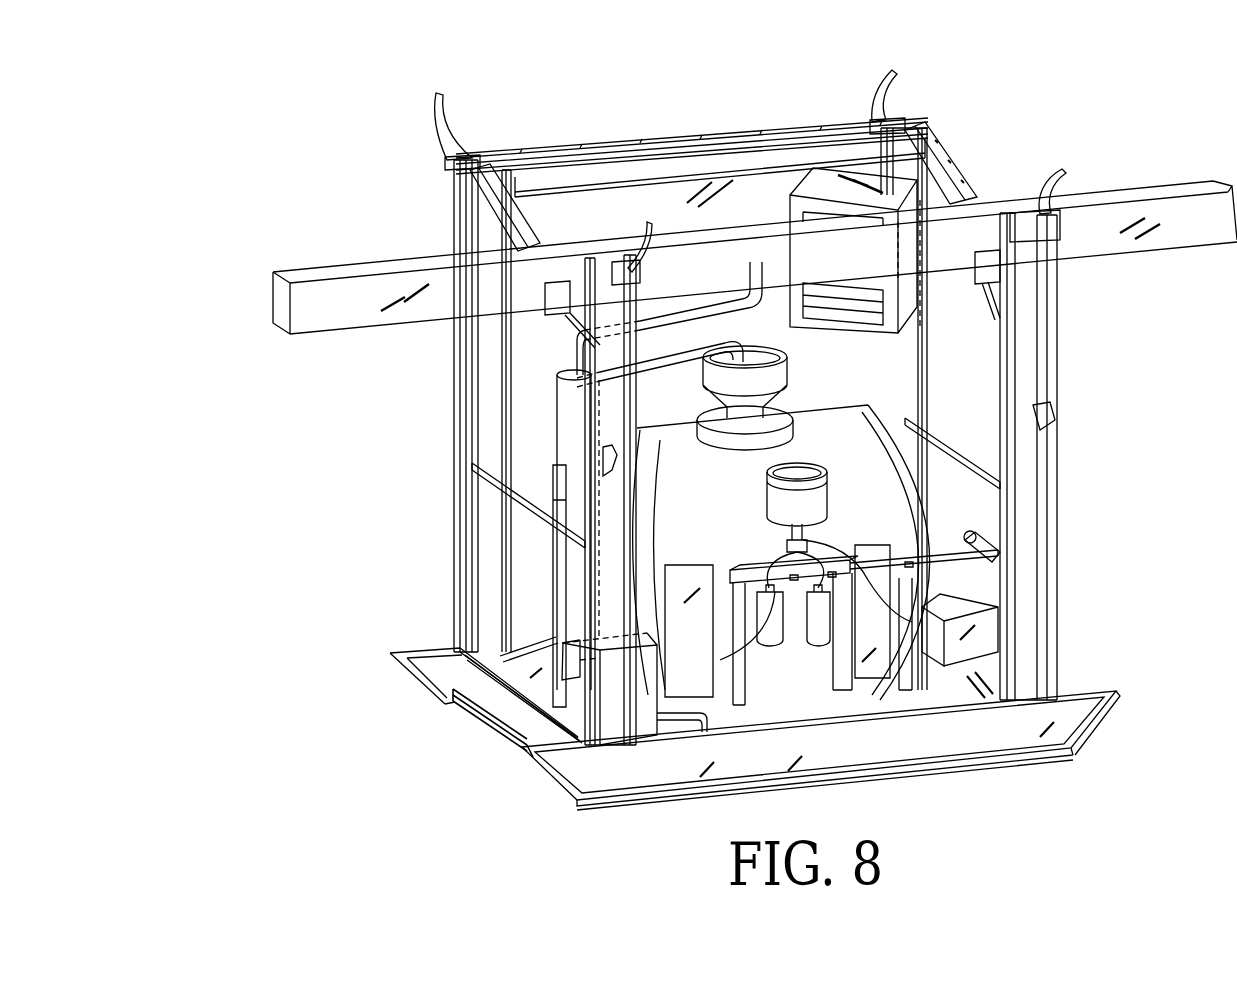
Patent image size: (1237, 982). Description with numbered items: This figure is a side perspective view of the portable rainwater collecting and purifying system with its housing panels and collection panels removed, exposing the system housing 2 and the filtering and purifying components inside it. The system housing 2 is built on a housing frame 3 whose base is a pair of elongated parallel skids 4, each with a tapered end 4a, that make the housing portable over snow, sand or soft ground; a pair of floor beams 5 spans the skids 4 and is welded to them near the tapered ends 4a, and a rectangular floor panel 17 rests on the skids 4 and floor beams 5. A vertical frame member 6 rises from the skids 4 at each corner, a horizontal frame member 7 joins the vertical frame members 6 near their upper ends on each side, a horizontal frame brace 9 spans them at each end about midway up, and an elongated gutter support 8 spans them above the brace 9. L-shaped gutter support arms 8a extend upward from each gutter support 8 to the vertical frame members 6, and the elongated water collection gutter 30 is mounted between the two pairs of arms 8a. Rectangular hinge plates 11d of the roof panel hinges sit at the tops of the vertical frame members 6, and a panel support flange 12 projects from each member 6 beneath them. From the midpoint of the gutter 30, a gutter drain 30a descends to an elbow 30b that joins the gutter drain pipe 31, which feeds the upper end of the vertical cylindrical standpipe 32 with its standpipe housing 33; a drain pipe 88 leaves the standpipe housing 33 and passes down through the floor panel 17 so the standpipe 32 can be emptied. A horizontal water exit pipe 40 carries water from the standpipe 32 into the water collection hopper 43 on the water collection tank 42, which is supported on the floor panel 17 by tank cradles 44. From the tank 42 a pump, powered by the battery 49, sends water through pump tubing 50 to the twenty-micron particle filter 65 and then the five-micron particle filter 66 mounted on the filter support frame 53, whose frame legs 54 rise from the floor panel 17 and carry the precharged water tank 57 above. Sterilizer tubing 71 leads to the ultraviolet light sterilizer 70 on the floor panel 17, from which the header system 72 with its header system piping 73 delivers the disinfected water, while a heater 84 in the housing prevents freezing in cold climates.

The system housing 2 is at (411, 211).
The housing frame 3 is at (556, 158).
The skids 4 is at (423, 650).
The tapered end 4a is at (445, 660).
The floor beams 5 is at (512, 708).
The vertical frame member 6 is at (492, 421).
The horizontal frame member 7 is at (706, 165).
The gutter support 8 is at (548, 341).
The gutter support arms 8a is at (942, 172).
The horizontal frame brace 9 is at (537, 508).
The hinge plates 11d is at (757, 164).
The panel support flange 12 is at (617, 464).
The floor panel 17 is at (463, 722).
The water collection gutter 30 is at (334, 296).
The gutter drain 30a is at (757, 268).
The elbow 30b is at (765, 318).
The gutter drain pipe 31 is at (783, 356).
The standpipe 32 is at (556, 442).
The standpipe housing 33 is at (577, 457).
The water exit pipe 40 is at (681, 366).
The water collection tank 42 is at (891, 452).
The water collection hopper 43 is at (768, 405).
The tank cradles 44 is at (693, 575).
The battery 49 is at (523, 743).
The pump tubing 50 is at (689, 668).
The filter support frame 53 is at (768, 565).
The frame legs 54 is at (740, 702).
The precharged water tank 57 is at (782, 497).
The 20-micron particle filter 65 is at (766, 655).
The 5-micron particle filter 66 is at (811, 658).
The ultraviolet light sterilizer 70 is at (985, 630).
The sterilizer tubing 71 is at (914, 688).
The header system 72 is at (1000, 561).
The header system piping 73 is at (985, 530).
The heater 84 is at (822, 188).
The drain pipe 88 is at (677, 723).